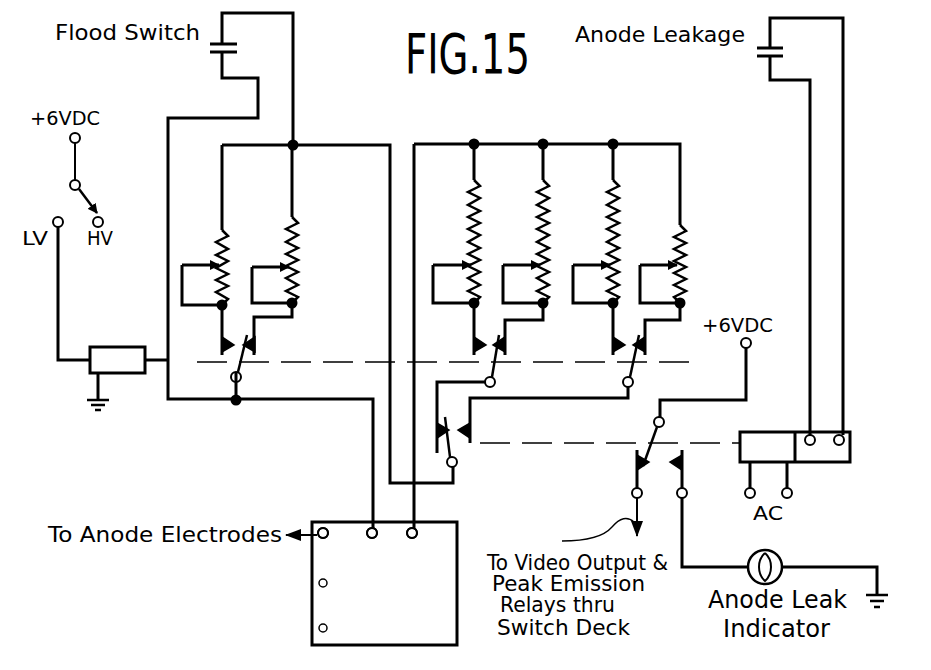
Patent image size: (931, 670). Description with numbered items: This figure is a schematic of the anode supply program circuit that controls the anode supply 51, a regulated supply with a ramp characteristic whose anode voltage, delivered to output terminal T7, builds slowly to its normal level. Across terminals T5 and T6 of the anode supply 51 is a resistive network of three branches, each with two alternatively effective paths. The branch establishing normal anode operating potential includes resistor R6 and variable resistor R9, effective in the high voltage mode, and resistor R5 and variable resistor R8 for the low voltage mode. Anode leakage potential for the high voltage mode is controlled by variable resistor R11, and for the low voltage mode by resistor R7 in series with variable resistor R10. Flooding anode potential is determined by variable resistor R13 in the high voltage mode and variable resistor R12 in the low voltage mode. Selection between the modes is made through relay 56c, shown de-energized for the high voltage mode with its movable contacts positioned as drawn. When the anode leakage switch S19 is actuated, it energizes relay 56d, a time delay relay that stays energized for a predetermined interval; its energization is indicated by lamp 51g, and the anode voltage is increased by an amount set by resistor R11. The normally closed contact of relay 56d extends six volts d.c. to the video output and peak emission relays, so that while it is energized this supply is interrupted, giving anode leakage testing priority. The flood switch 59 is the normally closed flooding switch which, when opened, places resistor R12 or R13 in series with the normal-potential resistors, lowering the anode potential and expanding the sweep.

The flood switch 59 is at (216, 56).
The relay 56c is at (125, 347).
The relay 56d is at (852, 446).
The anode supply 51 is at (312, 590).
The lamp 51g is at (779, 556).
The anode leakage switch S19 is at (766, 68).
The resistor R5 is at (452, 238).
The resistor R6 is at (521, 238).
The resistor R7 is at (590, 238).
The variable resistor R8 is at (470, 262).
The variable resistor R9 is at (539, 262).
The variable resistor R10 is at (609, 262).
The variable resistor R11 is at (676, 262).
The variable resistor R12 is at (226, 254).
The variable resistor R13 is at (297, 264).
The terminal T5 is at (416, 533).
The terminal T6 is at (372, 528).
The output terminal T7 is at (323, 528).